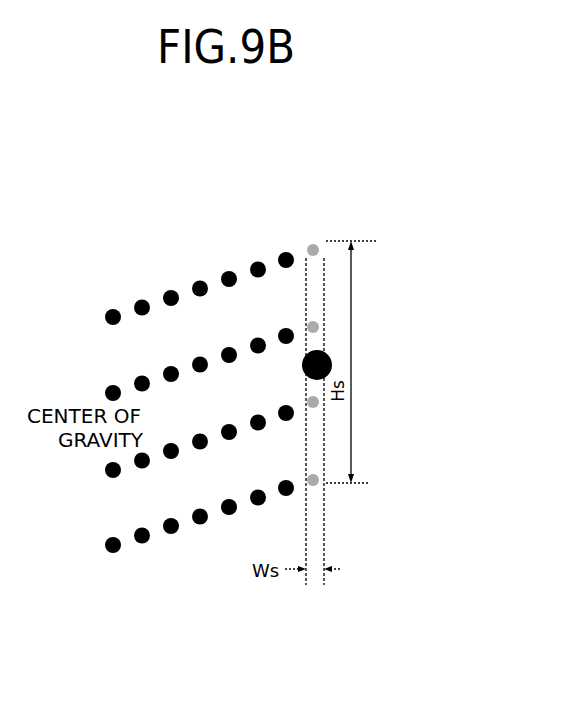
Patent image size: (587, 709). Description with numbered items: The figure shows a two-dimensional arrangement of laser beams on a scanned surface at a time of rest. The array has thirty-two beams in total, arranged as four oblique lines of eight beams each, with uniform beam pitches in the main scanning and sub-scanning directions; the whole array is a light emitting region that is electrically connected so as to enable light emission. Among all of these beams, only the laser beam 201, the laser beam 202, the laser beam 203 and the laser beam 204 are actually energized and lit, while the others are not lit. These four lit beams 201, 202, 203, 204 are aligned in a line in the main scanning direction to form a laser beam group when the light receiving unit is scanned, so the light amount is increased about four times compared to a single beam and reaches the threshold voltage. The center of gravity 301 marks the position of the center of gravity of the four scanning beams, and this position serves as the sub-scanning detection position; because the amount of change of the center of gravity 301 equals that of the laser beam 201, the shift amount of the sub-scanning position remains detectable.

The laser beam 201 is at (313, 246).
The laser beam 202 is at (314, 323).
The laser beam 203 is at (318, 404).
The laser beam 204 is at (317, 484).
The center of gravity 301 is at (160, 413).